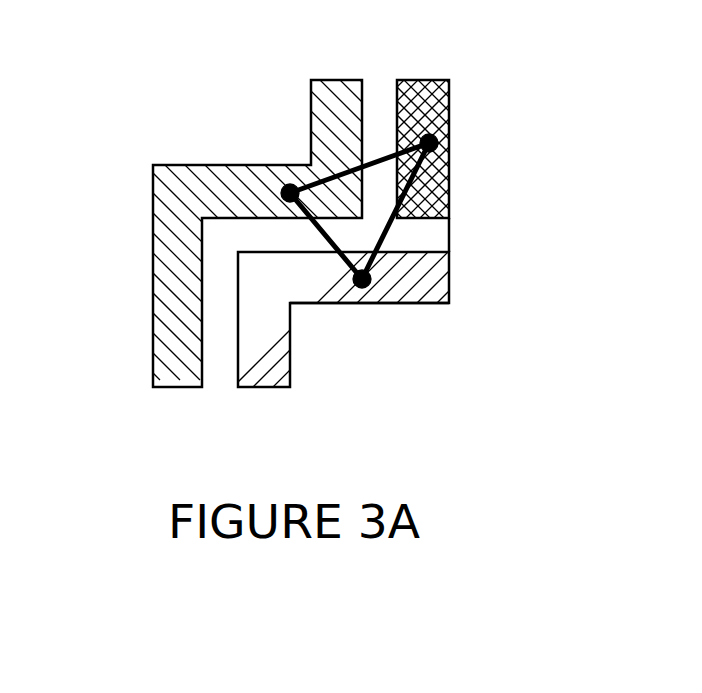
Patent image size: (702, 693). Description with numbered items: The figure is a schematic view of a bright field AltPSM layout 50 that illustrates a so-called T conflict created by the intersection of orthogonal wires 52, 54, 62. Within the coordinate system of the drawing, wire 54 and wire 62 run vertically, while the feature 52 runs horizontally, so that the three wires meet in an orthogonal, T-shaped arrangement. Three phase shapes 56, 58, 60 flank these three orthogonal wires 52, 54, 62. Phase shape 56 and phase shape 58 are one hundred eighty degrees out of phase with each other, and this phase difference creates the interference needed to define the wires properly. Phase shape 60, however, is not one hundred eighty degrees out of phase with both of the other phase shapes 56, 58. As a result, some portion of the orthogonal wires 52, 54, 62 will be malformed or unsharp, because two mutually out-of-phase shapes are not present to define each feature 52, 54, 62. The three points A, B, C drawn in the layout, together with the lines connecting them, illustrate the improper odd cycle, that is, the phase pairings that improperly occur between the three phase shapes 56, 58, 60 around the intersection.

The bright field AltPSM layout 50 is at (136, 117).
The wire 52 is at (300, 242).
The wire 54 is at (380, 91).
The phase shape 56 is at (173, 252).
The phase shape 58 is at (447, 303).
The phase shape 60 is at (452, 117).
The wire 62 is at (215, 330).
The point A is at (362, 288).
The point B is at (452, 155).
The point C is at (282, 185).